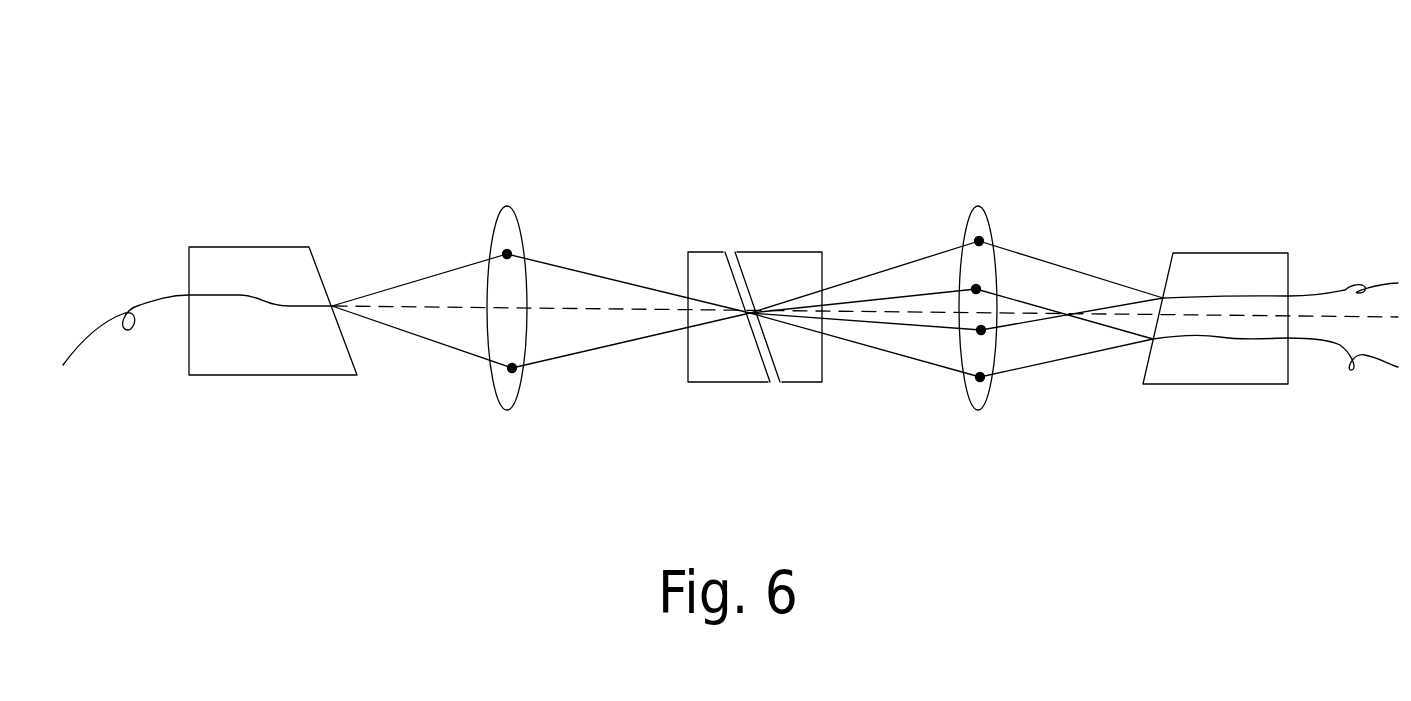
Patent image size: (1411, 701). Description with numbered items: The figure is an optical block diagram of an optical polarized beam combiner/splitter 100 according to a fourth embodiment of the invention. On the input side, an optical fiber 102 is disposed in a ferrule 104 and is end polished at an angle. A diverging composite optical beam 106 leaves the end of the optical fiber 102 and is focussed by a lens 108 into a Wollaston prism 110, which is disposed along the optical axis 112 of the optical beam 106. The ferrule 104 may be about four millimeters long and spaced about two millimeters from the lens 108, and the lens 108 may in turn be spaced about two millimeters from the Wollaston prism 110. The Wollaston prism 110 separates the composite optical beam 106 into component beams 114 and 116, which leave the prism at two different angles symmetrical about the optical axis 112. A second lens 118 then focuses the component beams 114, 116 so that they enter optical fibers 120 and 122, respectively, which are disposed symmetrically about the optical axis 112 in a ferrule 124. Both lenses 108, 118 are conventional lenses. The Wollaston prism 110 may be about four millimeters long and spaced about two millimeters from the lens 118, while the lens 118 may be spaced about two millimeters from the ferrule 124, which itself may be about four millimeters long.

The optical polarized beam combiner/splitter 100 is at (714, 130).
The optical fiber 102 is at (148, 293).
The ferrule 104 is at (237, 247).
The diverging composite optical beam 106 is at (423, 343).
The lens 108 is at (508, 410).
The Wollaston prism 110 is at (802, 385).
The optical axis 112 is at (592, 315).
The component beam 114 is at (900, 268).
The component beam 116 is at (912, 362).
The lens 118 is at (978, 410).
The optical fiber 120 is at (1340, 295).
The optical fiber 122 is at (1337, 342).
The ferrule 124 is at (1230, 253).